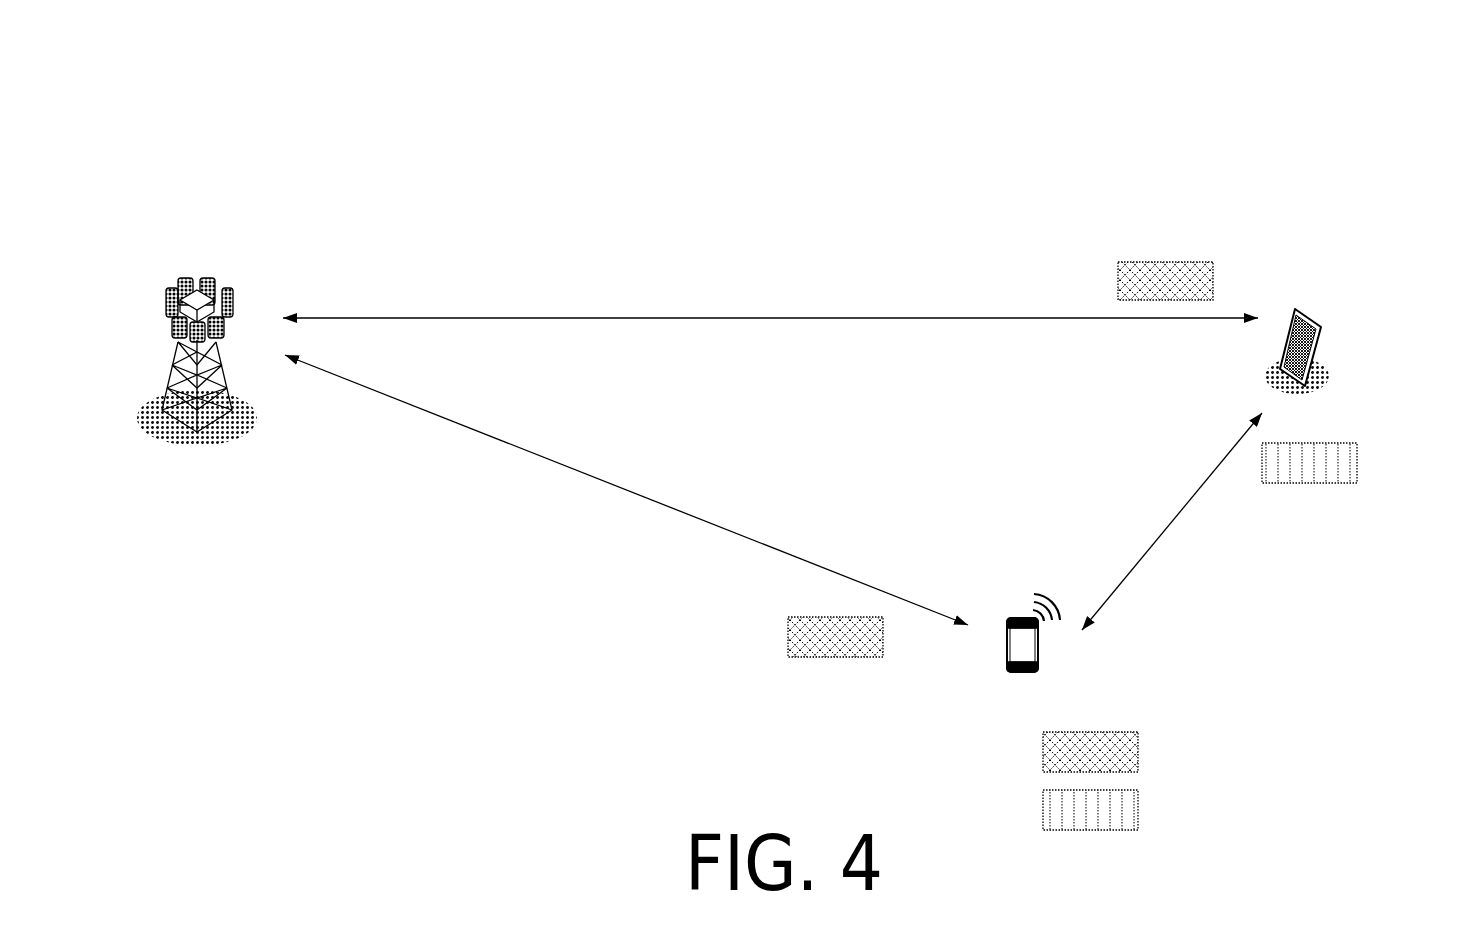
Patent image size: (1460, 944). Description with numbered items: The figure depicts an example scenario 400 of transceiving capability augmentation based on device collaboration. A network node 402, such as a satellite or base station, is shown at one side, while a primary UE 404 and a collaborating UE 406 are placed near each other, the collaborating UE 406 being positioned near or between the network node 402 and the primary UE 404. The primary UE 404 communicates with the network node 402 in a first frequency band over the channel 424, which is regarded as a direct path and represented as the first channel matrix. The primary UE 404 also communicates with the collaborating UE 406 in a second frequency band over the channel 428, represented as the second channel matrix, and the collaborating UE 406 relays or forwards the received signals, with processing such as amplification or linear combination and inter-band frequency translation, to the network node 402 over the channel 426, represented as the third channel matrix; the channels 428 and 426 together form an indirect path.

The example scenario 400 is at (753, 52).
The network node 402 is at (172, 280).
The primary UE 404 is at (1305, 308).
The collaborating UE 406 is at (1017, 603).
The channel 424 is at (563, 317).
The channel 426 is at (405, 403).
The channel 428 is at (1203, 497).